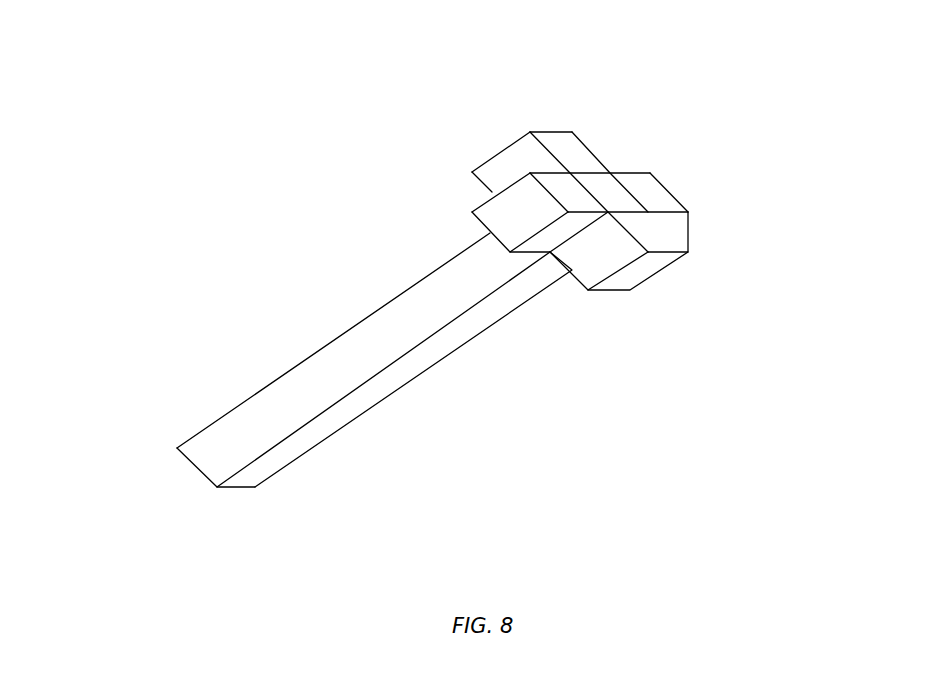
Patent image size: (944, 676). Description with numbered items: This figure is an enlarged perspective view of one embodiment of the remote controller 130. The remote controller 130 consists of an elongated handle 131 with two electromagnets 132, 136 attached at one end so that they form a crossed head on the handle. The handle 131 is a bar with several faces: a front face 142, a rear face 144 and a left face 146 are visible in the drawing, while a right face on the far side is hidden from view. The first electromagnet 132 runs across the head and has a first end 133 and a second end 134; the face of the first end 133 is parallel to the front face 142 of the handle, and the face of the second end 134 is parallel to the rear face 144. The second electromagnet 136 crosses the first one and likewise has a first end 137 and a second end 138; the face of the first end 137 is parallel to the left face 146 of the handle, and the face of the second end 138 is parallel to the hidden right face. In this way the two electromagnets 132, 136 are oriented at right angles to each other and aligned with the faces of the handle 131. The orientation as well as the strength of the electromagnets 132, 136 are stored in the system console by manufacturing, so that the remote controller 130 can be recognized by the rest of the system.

The remote controller 130 is at (363, 268).
The handle 131 is at (434, 371).
The first electromagnet 132 is at (590, 152).
The first end of first electromagnet 133 is at (548, 131).
The second end of first electromagnet 134 is at (648, 272).
The second electromagnet 136 is at (632, 165).
The first end of second electromagnet 137 is at (532, 213).
The second end of second electromagnet 138 is at (668, 192).
The front face 142 is at (297, 367).
The rear face 144 is at (315, 428).
The left face 146 is at (237, 428).